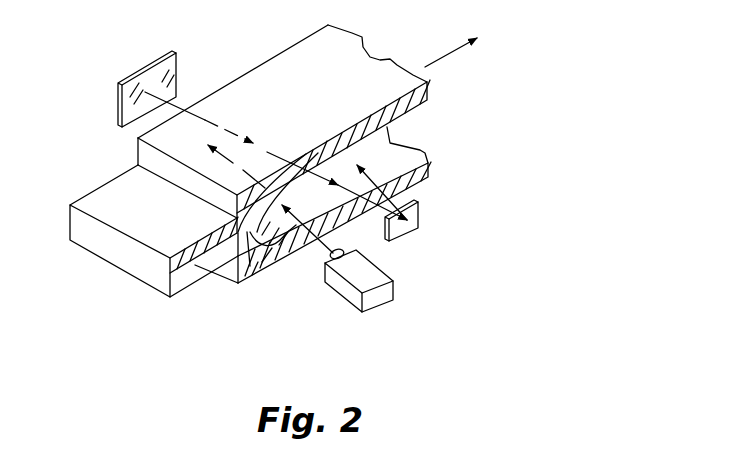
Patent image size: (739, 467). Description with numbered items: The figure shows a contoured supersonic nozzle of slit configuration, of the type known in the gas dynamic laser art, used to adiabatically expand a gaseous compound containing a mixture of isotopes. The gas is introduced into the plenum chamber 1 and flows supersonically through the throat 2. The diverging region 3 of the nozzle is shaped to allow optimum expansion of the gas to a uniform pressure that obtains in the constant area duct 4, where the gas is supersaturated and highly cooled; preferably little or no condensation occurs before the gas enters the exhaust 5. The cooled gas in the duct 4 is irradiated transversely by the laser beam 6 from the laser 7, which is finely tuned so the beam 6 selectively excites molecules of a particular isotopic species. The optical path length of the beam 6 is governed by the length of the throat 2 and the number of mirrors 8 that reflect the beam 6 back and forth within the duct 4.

The plenum chamber 1 is at (185, 276).
The throat 2 is at (250, 256).
The diverging region 3 is at (282, 238).
The constant area duct 4 is at (412, 147).
The exhaust 5 is at (460, 53).
The laser beam 6 is at (385, 207).
The laser 7 is at (380, 300).
The mirrors 8 is at (172, 75).